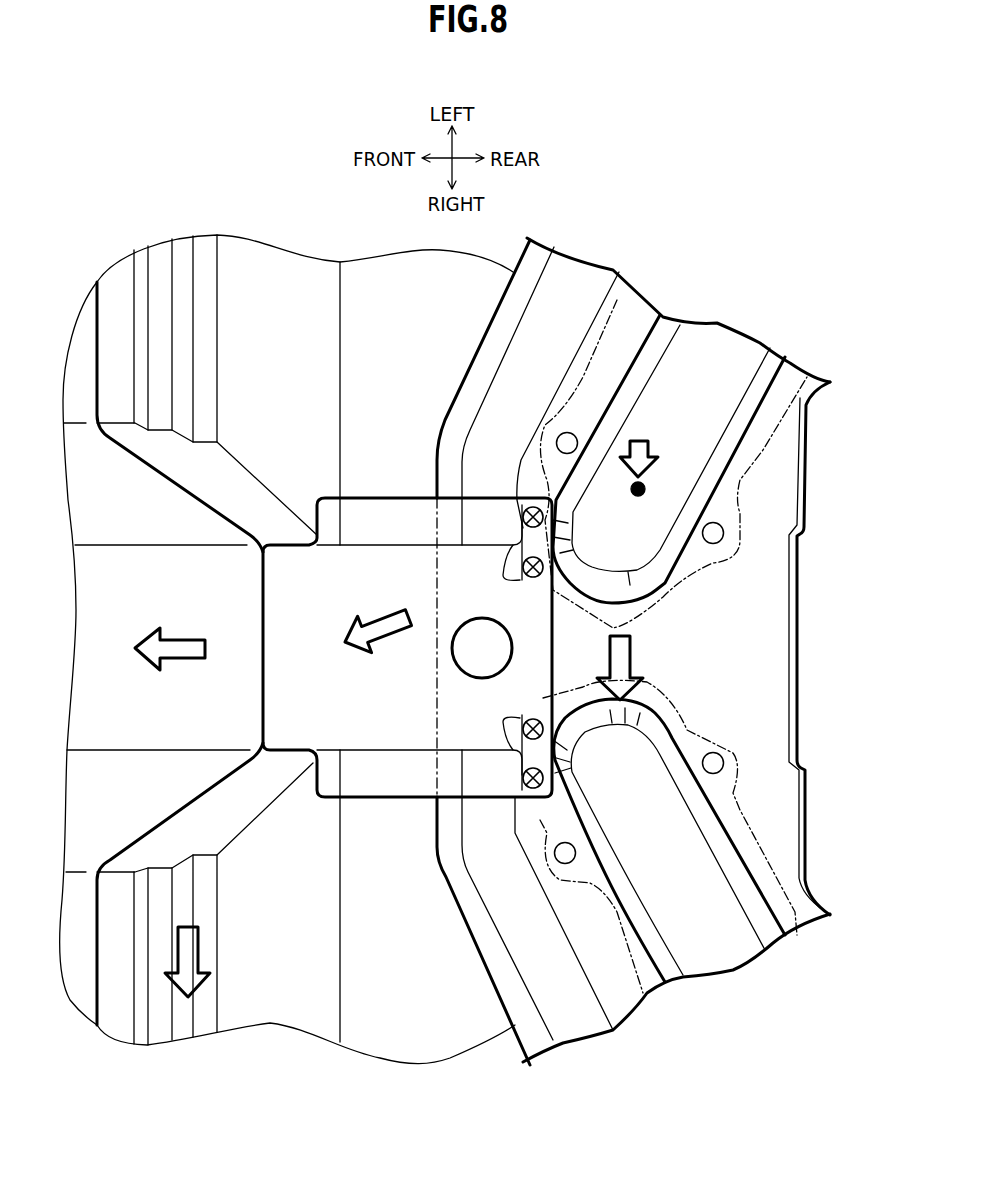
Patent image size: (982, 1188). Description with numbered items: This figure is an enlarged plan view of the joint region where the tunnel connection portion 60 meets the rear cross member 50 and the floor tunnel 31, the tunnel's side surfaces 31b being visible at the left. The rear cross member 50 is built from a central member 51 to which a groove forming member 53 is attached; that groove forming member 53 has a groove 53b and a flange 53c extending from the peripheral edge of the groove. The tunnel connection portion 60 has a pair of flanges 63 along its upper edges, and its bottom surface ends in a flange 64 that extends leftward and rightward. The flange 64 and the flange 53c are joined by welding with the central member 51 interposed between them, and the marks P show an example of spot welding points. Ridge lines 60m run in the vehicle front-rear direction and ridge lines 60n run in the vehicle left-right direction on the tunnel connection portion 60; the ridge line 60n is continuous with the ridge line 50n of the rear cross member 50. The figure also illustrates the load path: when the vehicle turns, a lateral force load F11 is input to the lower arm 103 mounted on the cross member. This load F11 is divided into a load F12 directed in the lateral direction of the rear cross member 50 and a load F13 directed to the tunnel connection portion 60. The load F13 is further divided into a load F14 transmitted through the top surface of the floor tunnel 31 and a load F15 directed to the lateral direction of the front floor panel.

The floor tunnel 31 is at (128, 703).
The side surface 31b is at (207, 647).
The rear cross member 50 is at (805, 586).
The ridge line 50n is at (543, 403).
The central member 51 is at (757, 657).
The groove forming member 53 is at (841, 283).
The groove 53b is at (723, 348).
The flange 53c is at (793, 363).
The tunnel connection portion 60 is at (323, 498).
The ridge line 60m is at (420, 545).
The ridge line 60n is at (513, 522).
The flange 63 is at (360, 527).
The flange 64 is at (513, 648).
The lower arm 103 is at (639, 496).
The welding points P is at (527, 572).
The lateral force load F11 is at (661, 432).
The load F12 is at (633, 662).
The load F13 is at (385, 610).
The load F14 is at (193, 620).
The load F15 is at (198, 953).